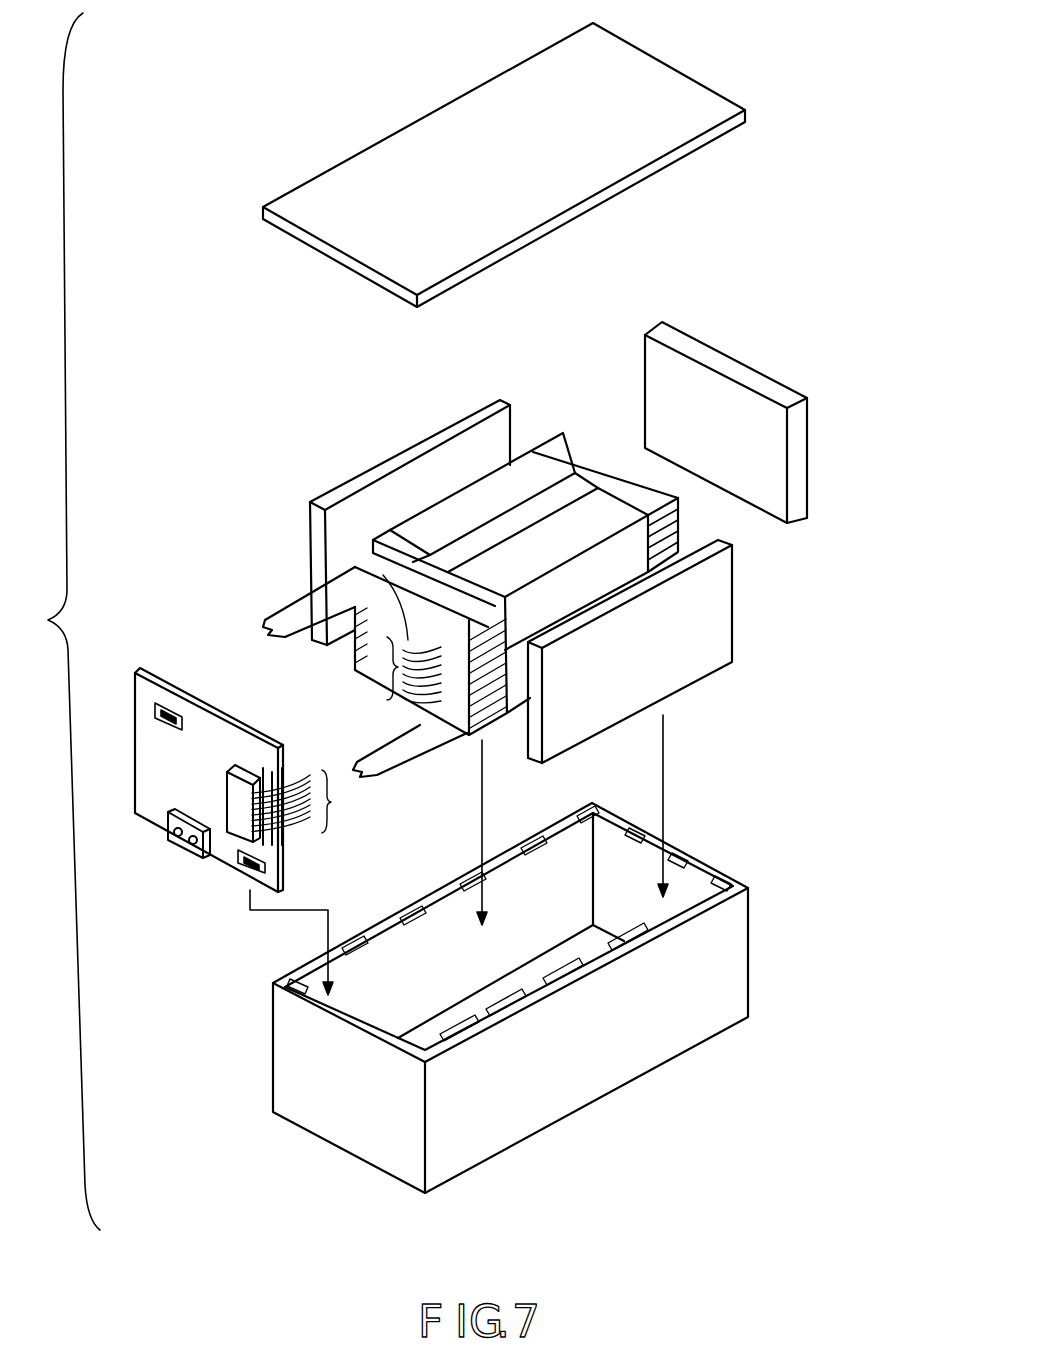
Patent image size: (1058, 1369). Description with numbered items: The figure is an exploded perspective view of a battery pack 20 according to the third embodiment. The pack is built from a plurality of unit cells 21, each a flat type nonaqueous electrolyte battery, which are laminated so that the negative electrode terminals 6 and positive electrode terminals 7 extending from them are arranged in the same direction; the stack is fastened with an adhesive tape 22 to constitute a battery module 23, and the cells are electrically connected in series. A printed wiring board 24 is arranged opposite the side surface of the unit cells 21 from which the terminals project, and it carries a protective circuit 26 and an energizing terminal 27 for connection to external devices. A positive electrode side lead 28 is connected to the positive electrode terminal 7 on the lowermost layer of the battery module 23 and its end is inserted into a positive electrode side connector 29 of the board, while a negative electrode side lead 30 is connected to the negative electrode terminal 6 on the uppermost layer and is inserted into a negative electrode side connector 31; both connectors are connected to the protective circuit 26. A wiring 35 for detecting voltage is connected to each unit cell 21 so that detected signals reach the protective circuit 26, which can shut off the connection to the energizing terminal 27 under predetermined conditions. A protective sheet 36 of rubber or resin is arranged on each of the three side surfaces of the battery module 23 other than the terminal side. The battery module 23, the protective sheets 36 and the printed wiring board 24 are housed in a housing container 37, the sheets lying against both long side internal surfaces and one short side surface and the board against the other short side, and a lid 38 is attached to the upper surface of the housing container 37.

The negative electrode terminal 6 is at (355, 565).
The positive electrode terminal 7 is at (440, 625).
The battery pack 20 is at (160, 195).
The unit cell 21 is at (680, 505).
The adhesive tape 22 is at (580, 502).
The battery module 23 is at (554, 418).
The printed wiring board 24 is at (167, 680).
The protective circuit 26 is at (240, 767).
The energizing terminal 27 is at (193, 850).
The positive electrode side lead 28 is at (398, 770).
The positive electrode side connector 29 is at (265, 868).
The negative electrode side lead 30 is at (282, 611).
The negative electrode side connector 31 is at (175, 715).
The wiring for detecting voltage 35 is at (384, 667).
The protective sheet 36 is at (377, 477).
The housing container 37 is at (734, 958).
The lid 38 is at (687, 97).